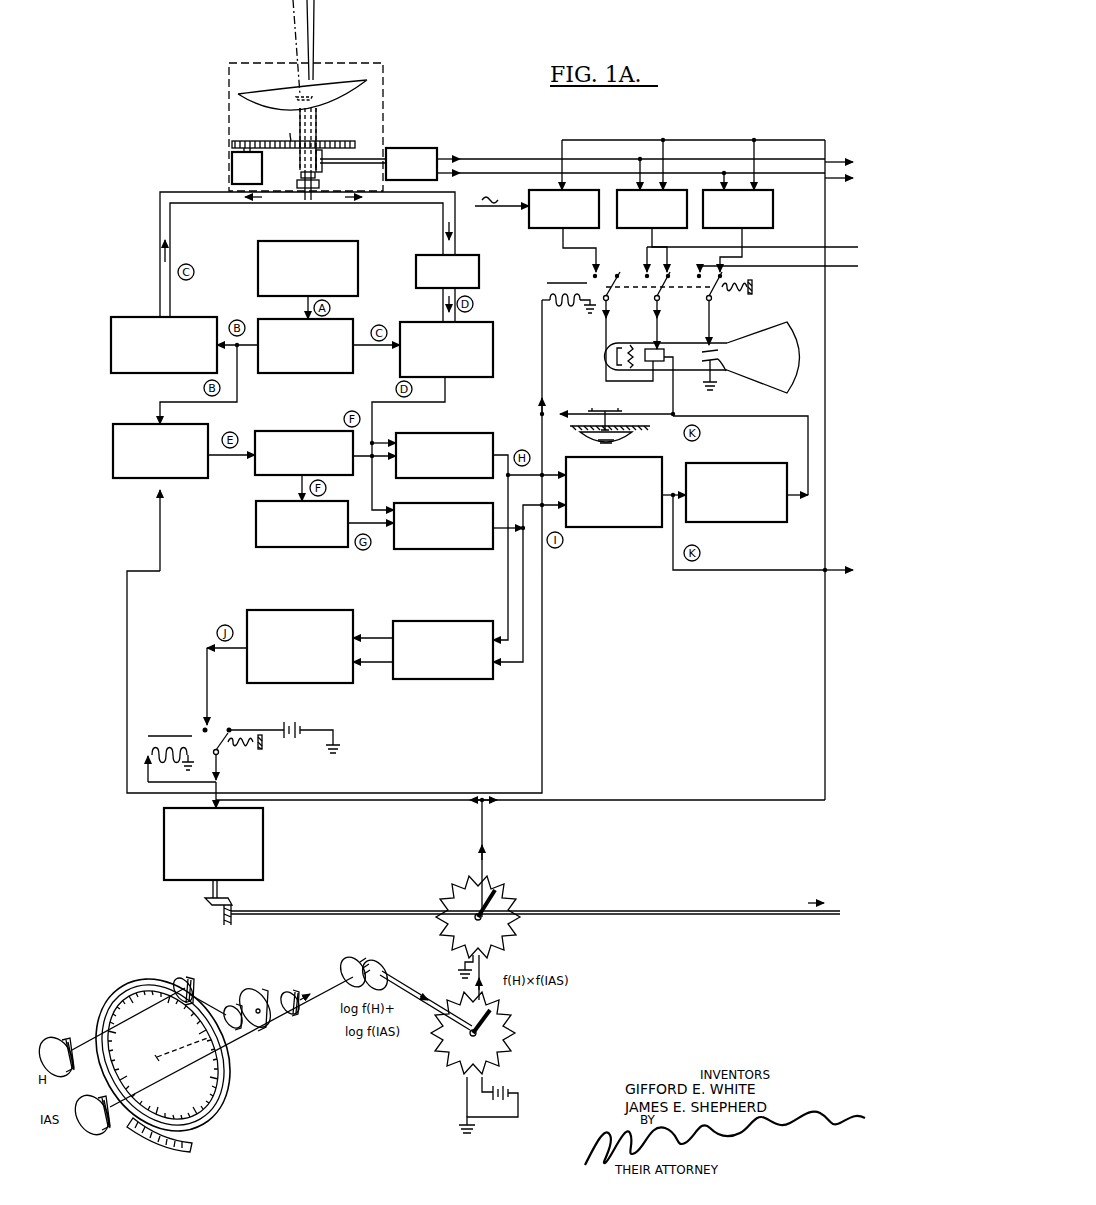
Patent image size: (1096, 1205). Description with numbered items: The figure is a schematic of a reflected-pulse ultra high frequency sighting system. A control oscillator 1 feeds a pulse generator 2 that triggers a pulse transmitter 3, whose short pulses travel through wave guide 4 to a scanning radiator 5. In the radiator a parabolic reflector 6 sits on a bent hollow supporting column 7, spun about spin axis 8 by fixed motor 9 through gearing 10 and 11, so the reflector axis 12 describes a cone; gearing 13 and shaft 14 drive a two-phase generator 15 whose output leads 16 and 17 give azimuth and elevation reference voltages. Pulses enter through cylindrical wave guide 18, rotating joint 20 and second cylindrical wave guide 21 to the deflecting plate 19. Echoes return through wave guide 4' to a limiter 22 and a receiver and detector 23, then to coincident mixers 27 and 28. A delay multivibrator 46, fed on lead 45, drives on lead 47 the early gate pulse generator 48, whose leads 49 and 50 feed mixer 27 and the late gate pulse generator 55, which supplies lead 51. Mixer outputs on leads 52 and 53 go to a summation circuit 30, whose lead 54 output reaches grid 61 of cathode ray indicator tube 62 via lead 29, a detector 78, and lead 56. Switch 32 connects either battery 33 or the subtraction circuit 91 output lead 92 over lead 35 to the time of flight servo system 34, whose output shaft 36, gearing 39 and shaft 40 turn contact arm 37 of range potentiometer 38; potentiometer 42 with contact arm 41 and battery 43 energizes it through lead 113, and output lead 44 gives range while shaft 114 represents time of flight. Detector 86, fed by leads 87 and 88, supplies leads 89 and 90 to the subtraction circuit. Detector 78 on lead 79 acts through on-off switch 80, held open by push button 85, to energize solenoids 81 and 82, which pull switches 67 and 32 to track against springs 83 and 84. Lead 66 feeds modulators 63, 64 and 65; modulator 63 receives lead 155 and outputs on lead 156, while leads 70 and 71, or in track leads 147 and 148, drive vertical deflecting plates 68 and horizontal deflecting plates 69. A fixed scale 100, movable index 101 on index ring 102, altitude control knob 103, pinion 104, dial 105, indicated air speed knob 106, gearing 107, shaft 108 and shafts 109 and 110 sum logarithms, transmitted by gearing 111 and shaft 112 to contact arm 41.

The control oscillator 1 is at (358, 268).
The pulse generator 2 is at (353, 360).
The pulse transmitter 3 is at (111, 352).
The wave guide 4 is at (307, 254).
The wave guide 4' is at (427, 227).
The scanning radiator 5 is at (383, 98).
The parabolic reflector 6 is at (350, 100).
The hollow supporting column 7 is at (316, 125).
The spin axis 8 is at (314, 45).
The fixed motor 9 is at (232, 176).
The gearing 10 is at (236, 135).
The gearing 11 is at (292, 140).
The reflector axis 12 is at (294, 16).
The gearing 13 is at (338, 148).
The shaft 14 is at (348, 164).
The two-phase generator 15 is at (432, 148).
The output lead 16 is at (475, 158).
The output lead 17 is at (477, 176).
The cylindrical wave guide 18 is at (301, 179).
The deflecting plate 19 is at (312, 96).
The rotating joint 20 is at (319, 183).
The second cylindrical wave guide 21 is at (300, 165).
The limiter 22 is at (479, 272).
The receiver and detector 23 is at (493, 330).
The coincident mixer 27 is at (493, 433).
The coincident mixer 28 is at (440, 549).
The lead 29 is at (680, 455).
The summation circuit 30 is at (630, 527).
The switch 32 is at (222, 748).
The battery 33 is at (292, 710).
The time of flight servo system 34 is at (263, 843).
The lead 35 is at (218, 778).
The output shaft 36 is at (205, 888).
The contact arm 37 is at (500, 897).
The range potentiometer 38 is at (506, 950).
The gearing 39 is at (232, 898).
The shaft 40 is at (350, 918).
The contact arm 41 is at (500, 1022).
The potentiometer 42 is at (510, 1060).
The battery 43 is at (515, 1090).
The output lead 44 is at (486, 845).
The lead 45 is at (160, 567).
The delay multivibrator 46 is at (113, 436).
The output lead 47 is at (222, 462).
The early gate pulse generator 48 is at (326, 424).
The output lead 49 is at (362, 464).
The output lead 50 is at (294, 488).
The lead 51 is at (382, 528).
The output lead 52 is at (514, 435).
The lead 53 is at (500, 552).
The output lead 54 is at (664, 535).
The late gate pulse generator 55 is at (302, 550).
The lead 56 is at (832, 575).
The grid 61 is at (630, 340).
The cathode ray indicator tube 62 is at (770, 318).
The modulator 63 is at (580, 233).
The modulator 64 is at (668, 237).
The modulator 65 is at (773, 226).
The lead 66 is at (745, 800).
The three pole double throw switch 67 is at (660, 300).
The vertical deflecting plates 68 is at (722, 372).
The horizontal deflecting plates 69 is at (660, 378).
The lead 70 is at (720, 317).
The lead 71 is at (660, 325).
The detector 78 is at (730, 522).
The lead 79 is at (800, 448).
The on-off switch 80 is at (610, 412).
The solenoid 81 is at (556, 305).
The solenoid 82 is at (158, 758).
The spring 83 is at (742, 292).
The spring 84 is at (258, 752).
The push button 85 is at (630, 440).
The detector 86 is at (440, 679).
The lead 87 is at (504, 606).
The lead 88 is at (522, 670).
The lead 89 is at (359, 630).
The lead 90 is at (358, 668).
The subtraction circuit 91 is at (300, 610).
The output lead 92 is at (207, 700).
The fixed scale 100 is at (192, 1148).
The movable index 101 is at (190, 1125).
The movable index ring 102 is at (228, 1086).
The altitude control knob 103 is at (76, 1022).
The pinion 104 is at (194, 980).
The dial 105 is at (225, 1062).
The indicated air speed knob 106 is at (95, 1137).
The gearing 107 is at (258, 988).
The shaft 108 is at (215, 1000).
The shaft 109 is at (240, 1035).
The shaft 110 is at (300, 990).
The gearing 111 is at (372, 957).
The shaft 112 is at (392, 980).
The output lead 113 is at (472, 989).
The shaft 114 is at (750, 920).
The lead 147 is at (779, 254).
The lead 148 is at (752, 250).
The lead 155 is at (502, 216).
The output lead 156 is at (562, 250).